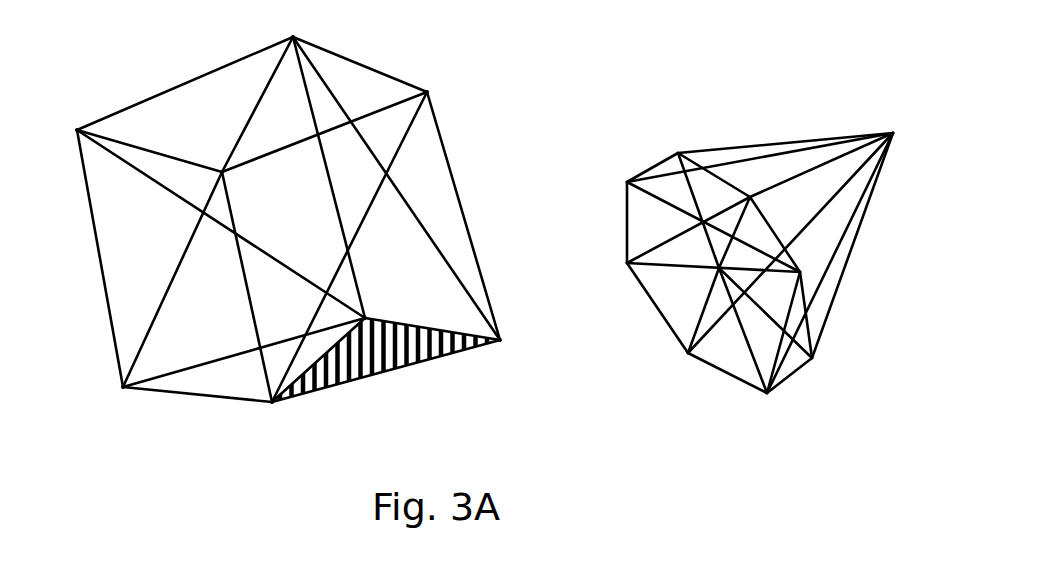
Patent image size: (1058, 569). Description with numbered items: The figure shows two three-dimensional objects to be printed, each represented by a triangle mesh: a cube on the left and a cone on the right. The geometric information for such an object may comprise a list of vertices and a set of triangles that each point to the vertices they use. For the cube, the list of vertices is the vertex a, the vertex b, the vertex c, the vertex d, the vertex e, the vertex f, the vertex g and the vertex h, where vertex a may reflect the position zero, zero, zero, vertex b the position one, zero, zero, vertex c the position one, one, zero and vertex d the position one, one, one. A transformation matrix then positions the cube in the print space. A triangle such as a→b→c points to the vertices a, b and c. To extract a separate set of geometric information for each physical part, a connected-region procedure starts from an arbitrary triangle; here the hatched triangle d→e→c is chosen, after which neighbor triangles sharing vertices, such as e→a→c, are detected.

The vertex a is at (292, 21).
The vertex b is at (440, 79).
The vertex c is at (511, 342).
The vertex d is at (275, 419).
The vertex e is at (377, 299).
The vertex f is at (112, 397).
The vertex g is at (65, 124).
The vertex h is at (211, 148).